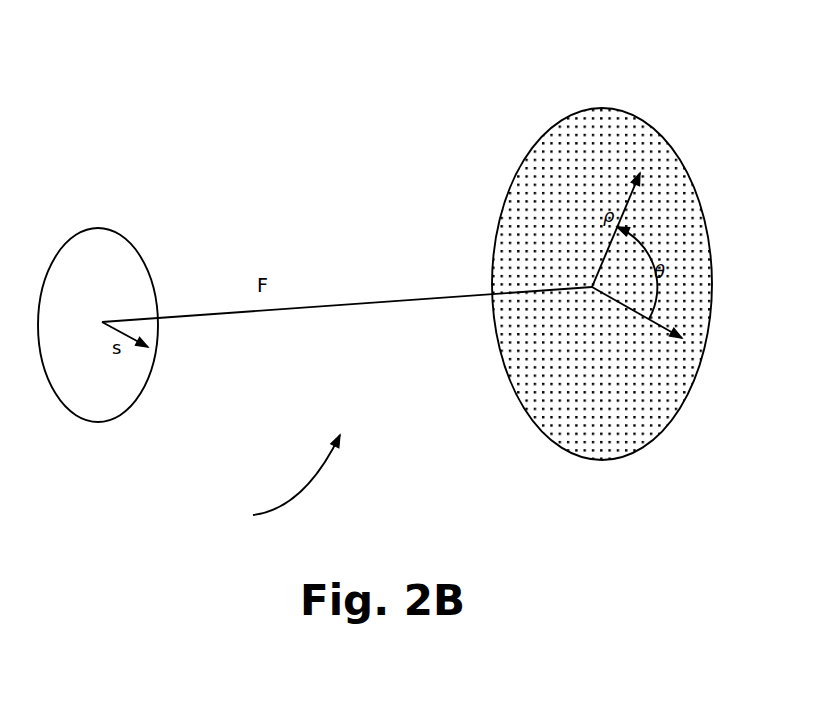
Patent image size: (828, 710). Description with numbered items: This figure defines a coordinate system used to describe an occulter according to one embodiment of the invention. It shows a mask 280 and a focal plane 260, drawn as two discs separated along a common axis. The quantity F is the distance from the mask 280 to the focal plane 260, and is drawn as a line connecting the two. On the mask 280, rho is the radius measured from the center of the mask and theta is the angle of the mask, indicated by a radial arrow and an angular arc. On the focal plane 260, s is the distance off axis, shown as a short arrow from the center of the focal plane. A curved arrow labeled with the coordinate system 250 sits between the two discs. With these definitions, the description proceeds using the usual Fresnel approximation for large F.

The coordinate system / geometry of light source and detector 250 is at (279, 480).
The focal plane 260 is at (138, 307).
The mask 280 is at (602, 256).